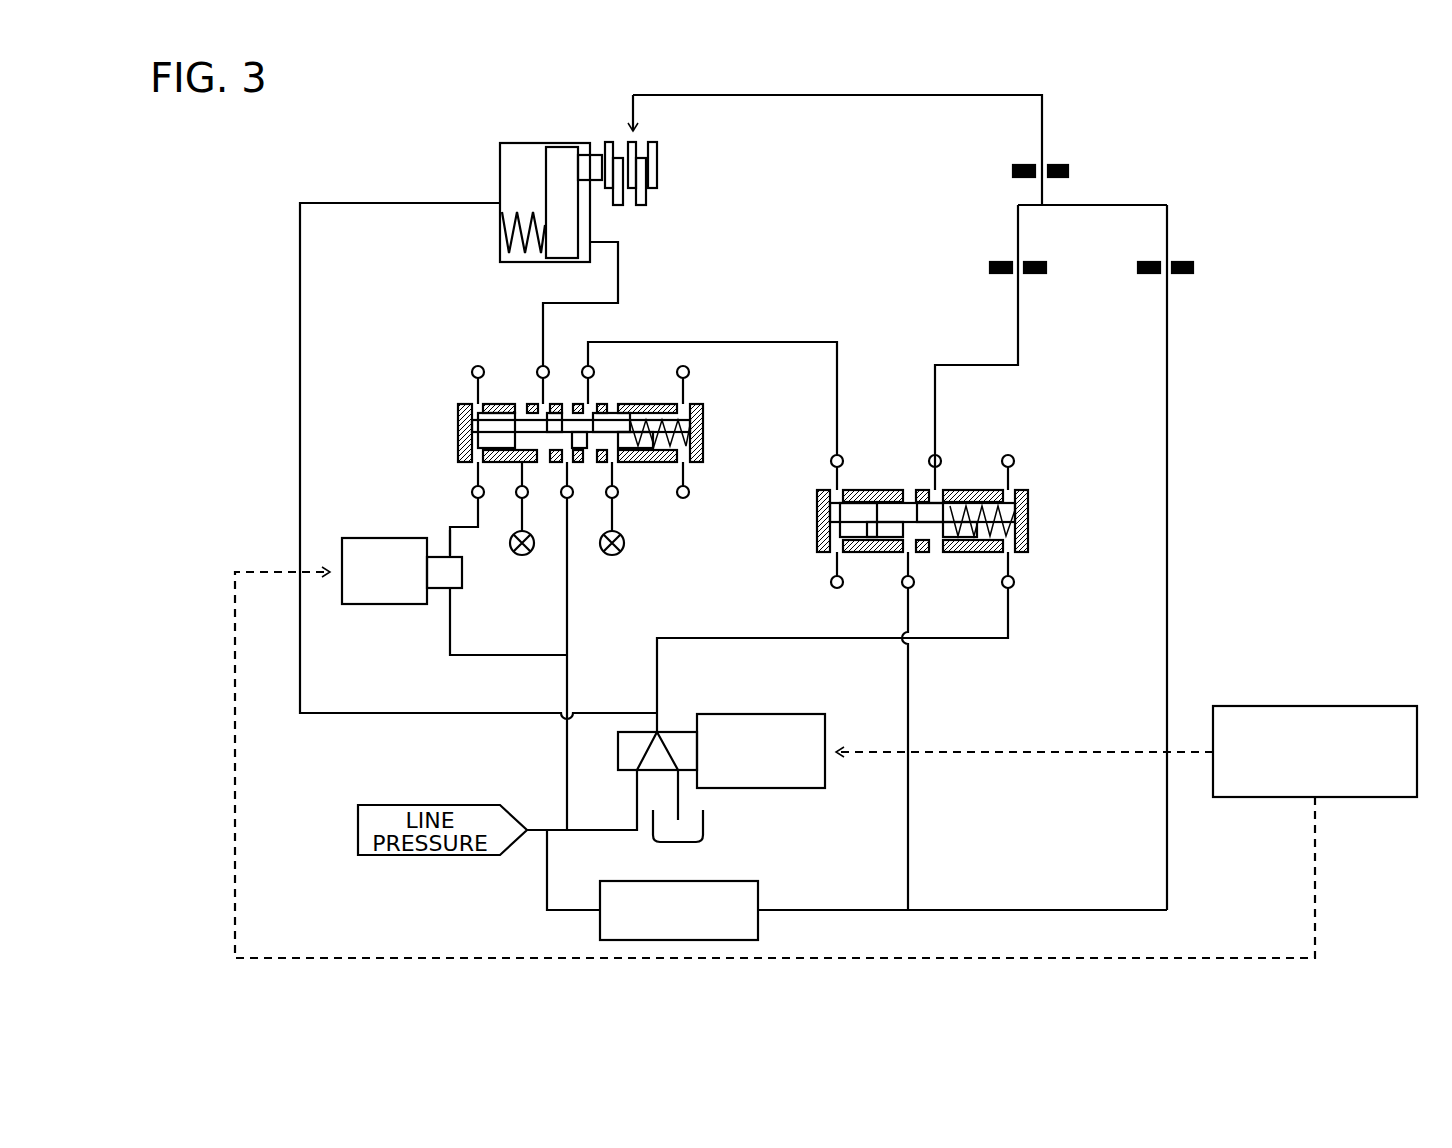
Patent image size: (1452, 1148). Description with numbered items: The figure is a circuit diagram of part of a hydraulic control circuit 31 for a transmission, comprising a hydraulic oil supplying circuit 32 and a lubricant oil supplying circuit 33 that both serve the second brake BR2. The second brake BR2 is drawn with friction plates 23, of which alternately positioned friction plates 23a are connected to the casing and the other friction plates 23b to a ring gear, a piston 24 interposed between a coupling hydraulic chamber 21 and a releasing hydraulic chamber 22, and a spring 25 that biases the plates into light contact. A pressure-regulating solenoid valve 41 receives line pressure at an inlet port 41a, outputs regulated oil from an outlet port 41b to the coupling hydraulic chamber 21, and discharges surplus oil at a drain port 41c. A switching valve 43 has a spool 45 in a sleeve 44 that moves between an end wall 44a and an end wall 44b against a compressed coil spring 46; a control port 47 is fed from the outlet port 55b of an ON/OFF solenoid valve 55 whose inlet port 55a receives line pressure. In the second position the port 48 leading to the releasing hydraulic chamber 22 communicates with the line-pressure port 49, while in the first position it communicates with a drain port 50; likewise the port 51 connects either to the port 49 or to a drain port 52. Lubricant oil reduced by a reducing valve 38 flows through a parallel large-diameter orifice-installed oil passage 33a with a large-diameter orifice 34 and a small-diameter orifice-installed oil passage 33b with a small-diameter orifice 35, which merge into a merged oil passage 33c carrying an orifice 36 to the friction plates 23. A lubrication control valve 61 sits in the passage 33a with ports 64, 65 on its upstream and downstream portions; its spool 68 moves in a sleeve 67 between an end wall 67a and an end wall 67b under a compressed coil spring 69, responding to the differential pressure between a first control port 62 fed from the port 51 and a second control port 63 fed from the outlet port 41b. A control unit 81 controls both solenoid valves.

The hydraulic control circuit 31 is at (366, 120).
The hydraulic oil supplying circuit 32 is at (318, 184).
The second brake BR2 is at (596, 187).
The coupling hydraulic chamber 21 is at (520, 155).
The releasing hydraulic chamber 22 is at (587, 253).
The friction plates 23 is at (683, 153).
The friction plates 23a is at (655, 142).
The friction plates 23b is at (640, 207).
The piston 24 is at (558, 170).
The spring 25 is at (517, 252).
The lubricant oil supplying circuit 33 is at (1096, 496).
The large-diameter orifice-installed oil passage 33a is at (1020, 320).
The small-diameter orifice-installed oil passage 33b is at (1168, 320).
The merged oil passage 33c is at (822, 95).
The large-diameter orifice 34 is at (1000, 262).
The small-diameter orifice 35 is at (1185, 262).
The orifice 36 is at (1022, 165).
The reducing valve 38 is at (760, 894).
The pressure-regulating solenoid valve 41 is at (676, 756).
The inlet port 41a is at (637, 770).
The outlet port 41b is at (660, 732).
The drain port 41c is at (680, 772).
The switching valve 43 is at (574, 581).
The sleeve 44 is at (645, 404).
The end wall 44a is at (458, 428).
The end wall 44b is at (704, 450).
The spool 45 is at (503, 410).
The compressed coil spring 46 is at (705, 425).
The control port 47 is at (472, 492).
The port 48 is at (548, 368).
The port 49 is at (570, 500).
The drain port 50 is at (524, 497).
The port 51 is at (595, 372).
The drain port 52 is at (618, 497).
The ON/OFF solenoid valve 55 is at (446, 561).
The inlet port 55a is at (455, 597).
The outlet port 55b is at (455, 548).
The lubrication control valve 61 is at (888, 641).
The first control port 62 is at (832, 455).
The second control port 63 is at (1012, 588).
The port 64 is at (912, 588).
The port 65 is at (940, 460).
The sleeve 67 is at (877, 490).
The end wall 67a is at (820, 528).
The end wall 67b is at (1030, 540).
The spool 68 is at (880, 555).
The compressed coil spring 69 is at (1030, 505).
The control unit 81 is at (1362, 706).